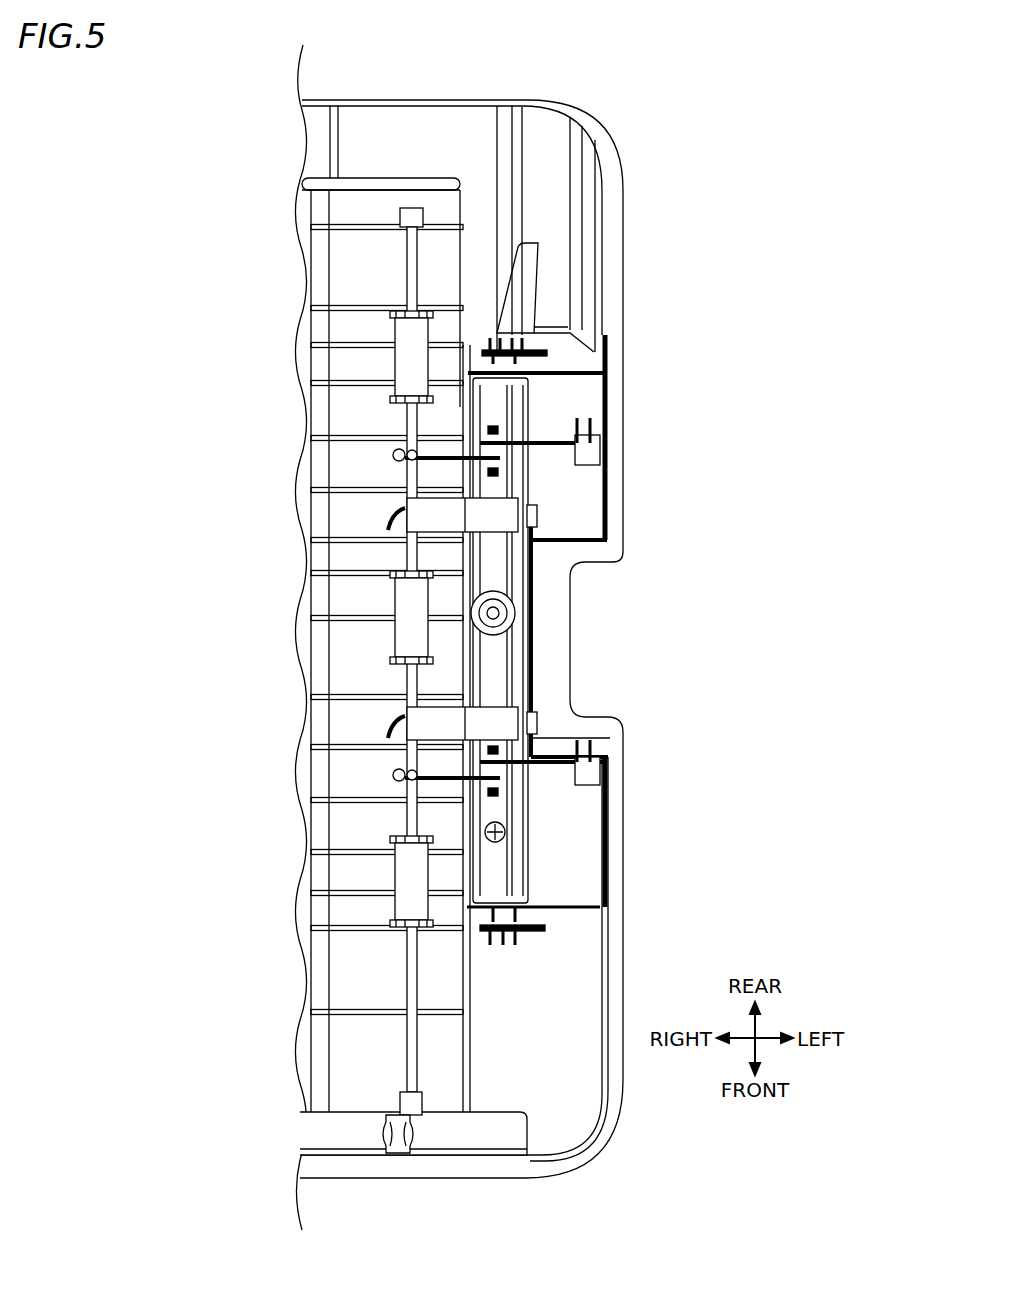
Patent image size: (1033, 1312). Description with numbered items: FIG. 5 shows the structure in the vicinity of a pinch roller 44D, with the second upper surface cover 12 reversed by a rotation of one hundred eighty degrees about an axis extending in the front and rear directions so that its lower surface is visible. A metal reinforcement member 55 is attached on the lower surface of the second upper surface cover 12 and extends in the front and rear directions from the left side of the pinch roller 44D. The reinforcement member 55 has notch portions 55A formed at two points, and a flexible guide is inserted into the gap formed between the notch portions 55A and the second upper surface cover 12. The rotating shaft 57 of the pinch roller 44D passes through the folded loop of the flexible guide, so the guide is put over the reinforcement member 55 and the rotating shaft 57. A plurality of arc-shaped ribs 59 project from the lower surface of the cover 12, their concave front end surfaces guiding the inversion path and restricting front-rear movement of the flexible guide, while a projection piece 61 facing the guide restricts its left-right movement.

The second upper surface cover 12 is at (623, 262).
The pinch roller 44D is at (408, 357).
The reinforcement member 55 is at (520, 397).
The notch portions 55A is at (533, 517).
The rotating shaft 57 is at (412, 947).
The ribs 59 is at (455, 483).
The projection piece 61 is at (407, 505).